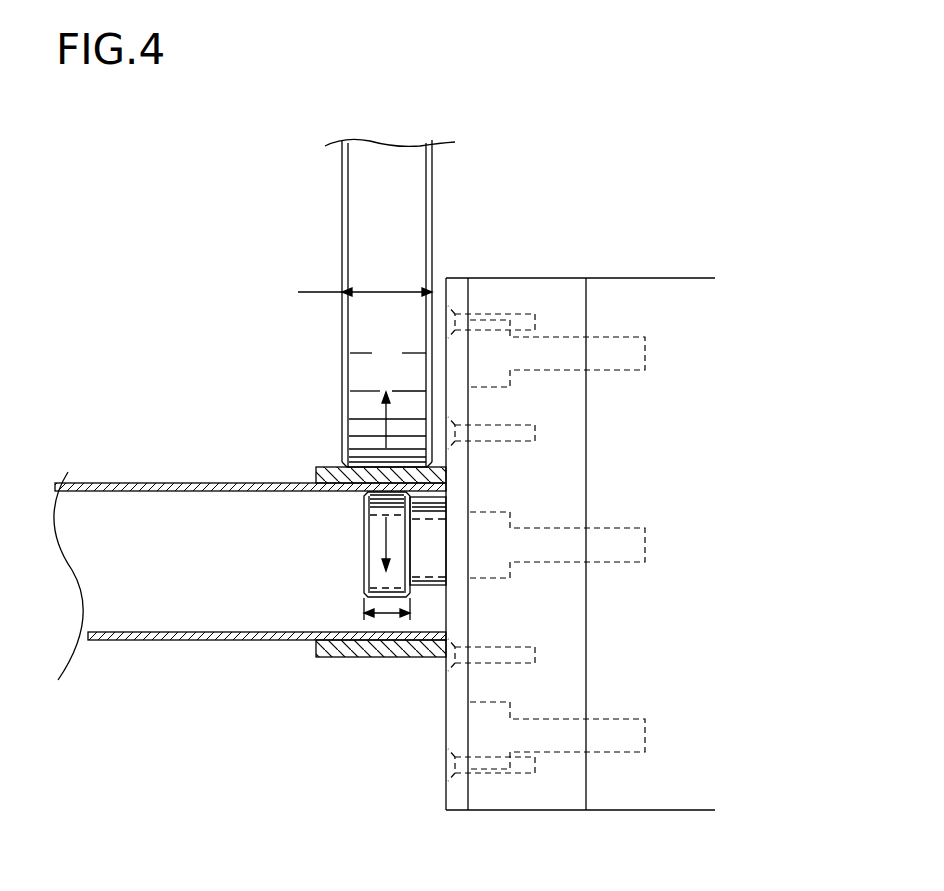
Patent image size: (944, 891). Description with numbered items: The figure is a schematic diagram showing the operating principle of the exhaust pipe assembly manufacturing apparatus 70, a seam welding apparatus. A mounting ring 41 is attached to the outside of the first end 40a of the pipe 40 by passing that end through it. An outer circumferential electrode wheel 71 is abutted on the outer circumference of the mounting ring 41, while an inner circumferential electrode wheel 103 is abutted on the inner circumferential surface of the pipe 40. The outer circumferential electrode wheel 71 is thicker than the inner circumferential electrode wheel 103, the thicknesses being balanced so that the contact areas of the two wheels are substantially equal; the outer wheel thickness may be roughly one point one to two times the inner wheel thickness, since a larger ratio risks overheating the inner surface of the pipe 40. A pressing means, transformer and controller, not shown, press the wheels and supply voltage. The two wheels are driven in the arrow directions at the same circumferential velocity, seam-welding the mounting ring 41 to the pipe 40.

The outer circumferential electrode wheel 71 is at (362, 212).
The exhaust pipe assembly manufacturing apparatus 70 is at (614, 229).
The first end 40a is at (448, 491).
The pipe 40 is at (132, 642).
The inner circumferential electrode wheel 103 is at (363, 548).
The mounting ring 41 is at (368, 648).